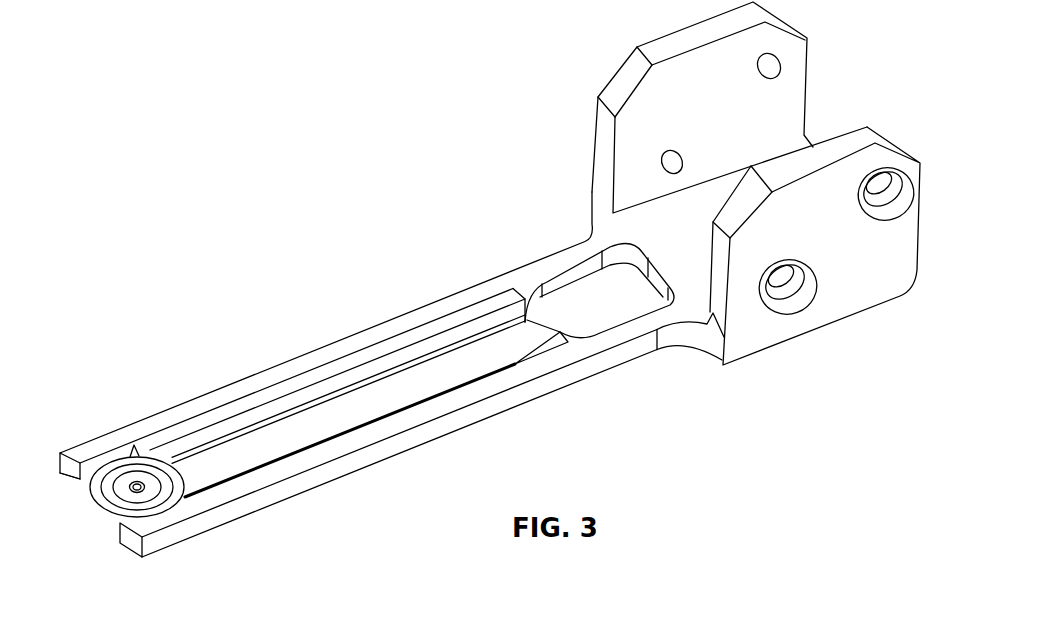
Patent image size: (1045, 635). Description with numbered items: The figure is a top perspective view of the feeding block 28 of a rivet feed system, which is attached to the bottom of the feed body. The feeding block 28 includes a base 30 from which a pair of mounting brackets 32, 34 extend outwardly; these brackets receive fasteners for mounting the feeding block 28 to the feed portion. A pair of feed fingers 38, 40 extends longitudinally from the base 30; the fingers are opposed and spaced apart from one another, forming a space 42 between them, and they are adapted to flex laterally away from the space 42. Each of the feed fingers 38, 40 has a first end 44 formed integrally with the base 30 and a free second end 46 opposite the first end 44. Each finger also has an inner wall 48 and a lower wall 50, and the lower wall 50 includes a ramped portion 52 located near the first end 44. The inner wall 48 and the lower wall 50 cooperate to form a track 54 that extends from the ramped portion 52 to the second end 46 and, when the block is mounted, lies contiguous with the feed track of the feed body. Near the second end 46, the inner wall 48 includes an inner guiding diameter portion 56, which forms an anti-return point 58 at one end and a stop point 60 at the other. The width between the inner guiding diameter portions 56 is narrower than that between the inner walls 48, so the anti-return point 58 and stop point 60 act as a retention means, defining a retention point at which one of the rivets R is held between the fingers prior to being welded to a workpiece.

The feeding block 28 is at (395, 222).
The base 30 is at (752, 358).
The mounting bracket 32 is at (622, 68).
The mounting bracket 34 is at (893, 136).
The feed finger 38 is at (250, 377).
The feed finger 40 is at (377, 467).
The space 42 is at (252, 459).
The first end 44 is at (567, 254).
The second end 46 is at (70, 457).
The inner wall 48 is at (335, 370).
The lower wall 50 is at (385, 367).
The ramped portion 52 is at (500, 307).
The track 54 is at (298, 387).
The inner guiding diameter portion 56 is at (112, 458).
The anti-return point 58 is at (137, 453).
The stop point 60 is at (65, 478).
The rivet R is at (108, 513).